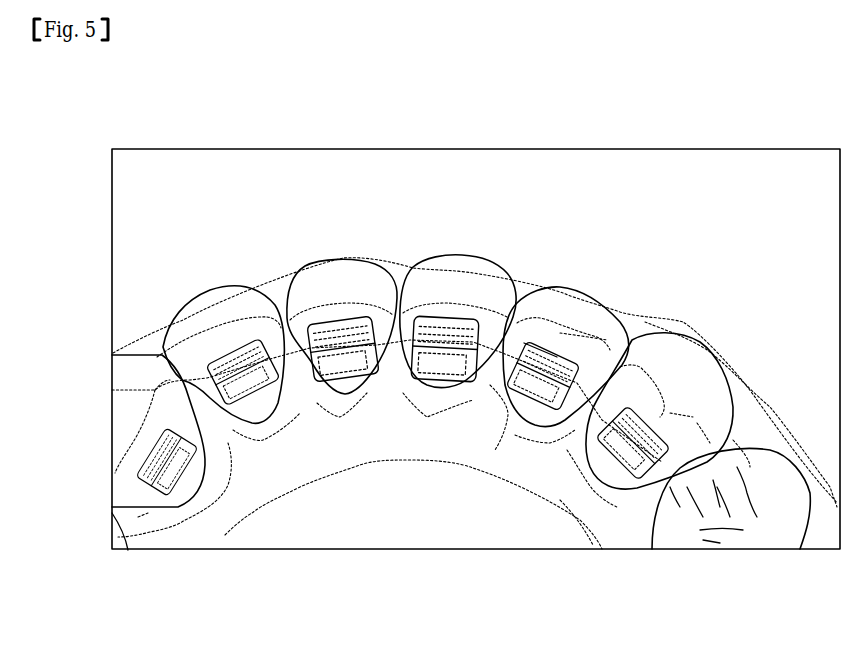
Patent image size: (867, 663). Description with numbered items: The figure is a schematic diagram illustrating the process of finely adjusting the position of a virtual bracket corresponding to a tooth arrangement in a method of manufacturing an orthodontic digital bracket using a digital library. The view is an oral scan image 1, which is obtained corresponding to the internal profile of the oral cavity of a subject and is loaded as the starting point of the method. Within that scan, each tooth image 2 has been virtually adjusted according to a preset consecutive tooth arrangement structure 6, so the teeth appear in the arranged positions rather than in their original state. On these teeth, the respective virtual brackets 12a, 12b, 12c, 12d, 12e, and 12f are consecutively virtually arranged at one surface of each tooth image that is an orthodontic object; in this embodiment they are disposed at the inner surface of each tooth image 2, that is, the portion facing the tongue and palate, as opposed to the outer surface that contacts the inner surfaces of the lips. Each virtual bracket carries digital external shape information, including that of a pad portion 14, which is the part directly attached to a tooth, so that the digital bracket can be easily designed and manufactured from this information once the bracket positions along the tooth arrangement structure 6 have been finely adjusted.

The oral scan image 1 is at (137, 111).
The tooth image 2 is at (607, 330).
The consecutive tooth arrangement structure 6 is at (112, 390).
The virtual bracket 12a is at (154, 504).
The virtual bracket 12b is at (226, 347).
The virtual bracket 12c is at (338, 313).
The virtual bracket 12d is at (450, 314).
The virtual bracket 12e is at (524, 420).
The virtual bracket 12f is at (655, 423).
The pad portion 14 is at (540, 342).